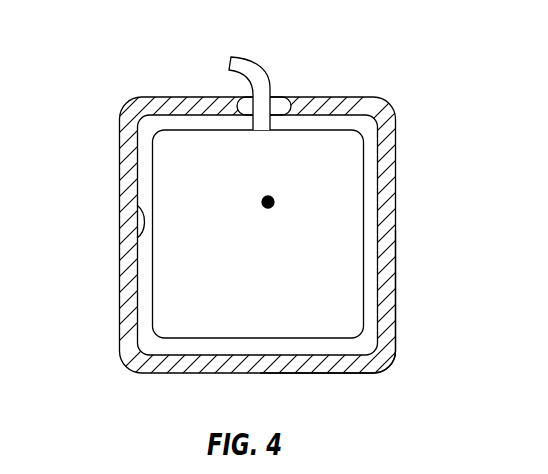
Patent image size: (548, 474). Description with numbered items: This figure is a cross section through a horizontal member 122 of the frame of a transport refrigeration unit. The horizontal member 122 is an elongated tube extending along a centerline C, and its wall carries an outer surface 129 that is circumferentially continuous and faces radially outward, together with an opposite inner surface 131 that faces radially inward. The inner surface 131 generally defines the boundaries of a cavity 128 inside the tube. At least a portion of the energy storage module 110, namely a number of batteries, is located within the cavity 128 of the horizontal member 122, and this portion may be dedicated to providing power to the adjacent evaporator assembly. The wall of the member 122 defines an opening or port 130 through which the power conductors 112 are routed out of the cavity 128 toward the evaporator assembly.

The energy storage module 110 is at (278, 247).
The power conductors 112 is at (250, 62).
The horizontal member 122 is at (397, 210).
The cavity 128 is at (368, 147).
The outer surface 129 is at (397, 272).
The port 130 is at (276, 97).
The inner surface 131 is at (137, 238).
The centerline C is at (272, 197).